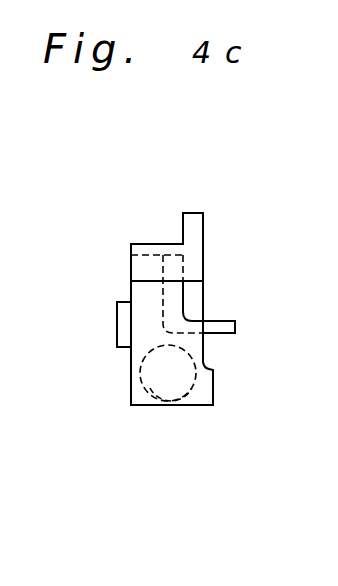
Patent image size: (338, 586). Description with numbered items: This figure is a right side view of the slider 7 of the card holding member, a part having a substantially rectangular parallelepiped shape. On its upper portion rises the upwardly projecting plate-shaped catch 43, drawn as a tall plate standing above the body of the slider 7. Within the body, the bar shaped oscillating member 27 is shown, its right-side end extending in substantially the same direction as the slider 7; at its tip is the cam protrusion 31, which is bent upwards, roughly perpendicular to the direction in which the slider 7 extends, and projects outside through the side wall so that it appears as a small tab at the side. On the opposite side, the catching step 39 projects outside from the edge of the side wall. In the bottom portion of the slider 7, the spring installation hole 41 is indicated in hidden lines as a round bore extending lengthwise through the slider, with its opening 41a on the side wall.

The slider 7 is at (137, 223).
The plate-shaped catch 43 is at (188, 222).
The oscillating member 27 is at (191, 302).
The cam protrusion 31 is at (235, 333).
The catching step 39 is at (117, 347).
The opening 41a is at (152, 397).
The spring installation hole 41 is at (197, 398).